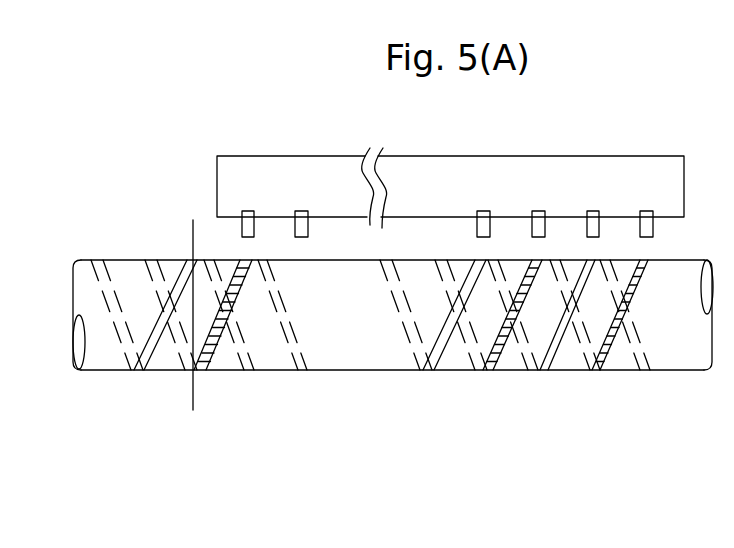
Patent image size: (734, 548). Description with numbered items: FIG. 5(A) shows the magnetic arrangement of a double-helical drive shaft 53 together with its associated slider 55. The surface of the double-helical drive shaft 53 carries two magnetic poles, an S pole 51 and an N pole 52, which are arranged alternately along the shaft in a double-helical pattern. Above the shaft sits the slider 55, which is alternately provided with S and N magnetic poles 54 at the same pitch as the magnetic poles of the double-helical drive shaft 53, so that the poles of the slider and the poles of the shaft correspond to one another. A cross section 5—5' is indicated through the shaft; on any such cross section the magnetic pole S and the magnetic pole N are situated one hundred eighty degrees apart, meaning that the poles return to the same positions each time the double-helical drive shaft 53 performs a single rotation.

The S pole 51 is at (207, 370).
The N pole 52 is at (145, 372).
The double-helical drive shaft 53 is at (93, 370).
The S and N magnetic poles 54 is at (242, 233).
The slider 55 is at (288, 156).
The cross section 5—5' 5 is at (189, 229).